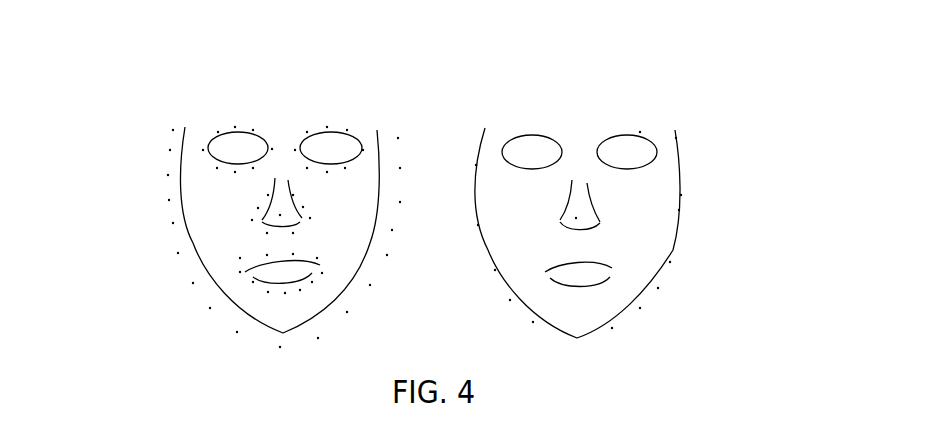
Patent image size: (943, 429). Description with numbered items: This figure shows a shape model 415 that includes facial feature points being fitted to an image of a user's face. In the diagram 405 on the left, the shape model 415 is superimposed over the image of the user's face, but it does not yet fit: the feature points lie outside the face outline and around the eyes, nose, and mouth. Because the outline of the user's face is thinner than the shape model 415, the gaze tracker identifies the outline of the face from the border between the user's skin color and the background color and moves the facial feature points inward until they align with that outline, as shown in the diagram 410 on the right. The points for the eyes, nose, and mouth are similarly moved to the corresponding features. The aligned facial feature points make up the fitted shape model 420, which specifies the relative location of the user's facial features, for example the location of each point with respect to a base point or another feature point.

The diagram 405 is at (117, 78).
The diagram 410 is at (729, 78).
The shape model 415 is at (144, 175).
The fitted shape model 420 is at (713, 159).